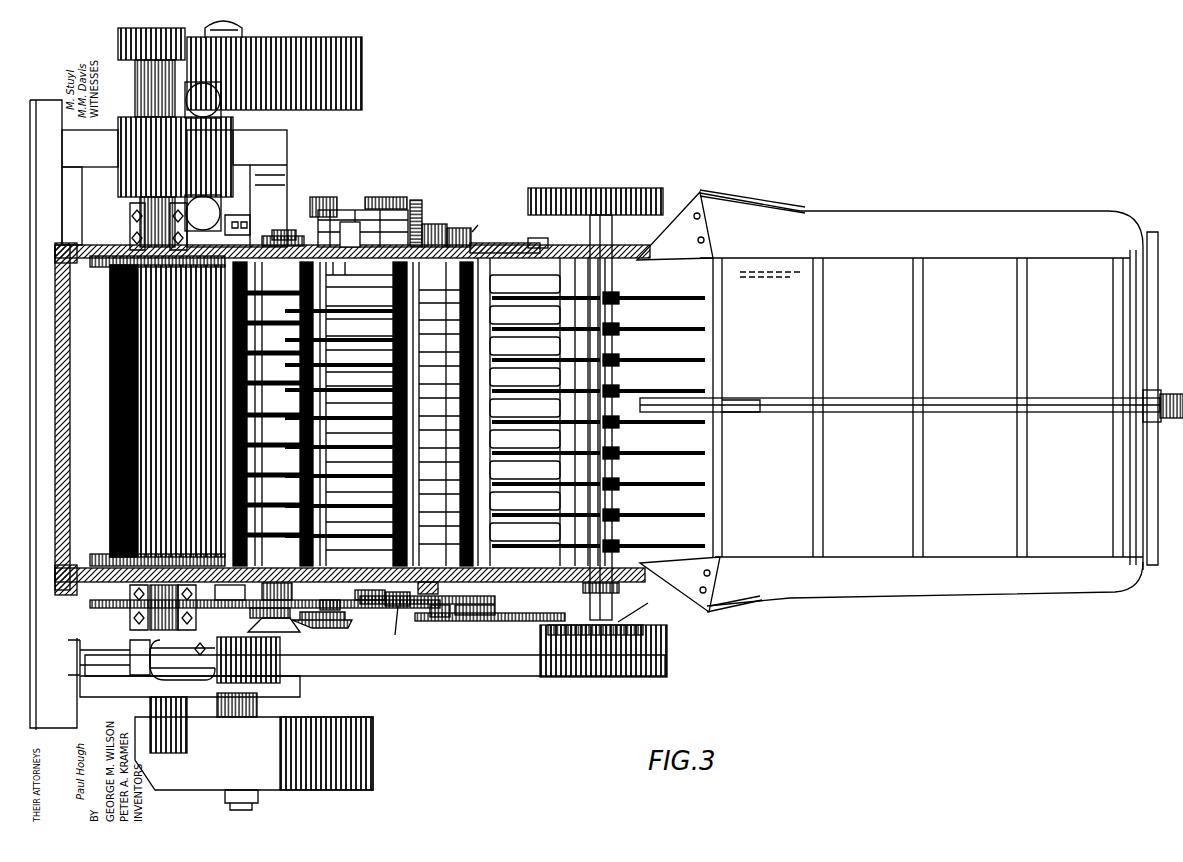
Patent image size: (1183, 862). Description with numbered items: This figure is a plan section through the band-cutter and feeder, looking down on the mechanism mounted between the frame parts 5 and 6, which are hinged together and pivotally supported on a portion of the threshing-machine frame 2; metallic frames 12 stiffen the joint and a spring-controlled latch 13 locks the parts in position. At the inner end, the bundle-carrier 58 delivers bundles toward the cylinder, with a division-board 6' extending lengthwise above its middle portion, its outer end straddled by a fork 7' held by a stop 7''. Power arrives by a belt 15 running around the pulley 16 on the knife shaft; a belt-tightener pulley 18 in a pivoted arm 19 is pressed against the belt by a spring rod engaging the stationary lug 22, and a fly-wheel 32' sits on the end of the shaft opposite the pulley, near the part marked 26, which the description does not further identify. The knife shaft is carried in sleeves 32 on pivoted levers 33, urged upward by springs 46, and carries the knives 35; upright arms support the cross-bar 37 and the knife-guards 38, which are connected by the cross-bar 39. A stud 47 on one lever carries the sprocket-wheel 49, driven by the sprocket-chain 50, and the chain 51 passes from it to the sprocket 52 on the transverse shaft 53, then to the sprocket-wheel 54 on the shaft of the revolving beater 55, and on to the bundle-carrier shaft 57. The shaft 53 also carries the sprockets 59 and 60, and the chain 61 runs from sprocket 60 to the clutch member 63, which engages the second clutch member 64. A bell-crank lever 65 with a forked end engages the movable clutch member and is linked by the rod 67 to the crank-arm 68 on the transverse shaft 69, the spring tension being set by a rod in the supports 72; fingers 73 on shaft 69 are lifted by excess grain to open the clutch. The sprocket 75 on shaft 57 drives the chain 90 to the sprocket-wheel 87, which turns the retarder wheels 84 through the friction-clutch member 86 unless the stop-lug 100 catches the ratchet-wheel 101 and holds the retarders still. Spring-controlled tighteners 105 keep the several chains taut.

The frame of threshing-machine 2 is at (62, 185).
The inner frame part 5 is at (445, 552).
The outer frame part 6 is at (929, 399).
The division-board 6' is at (748, 420).
The fork 7' is at (900, 418).
The stop 7'' is at (1163, 416).
The metallic frame 12 is at (688, 622).
The spring-controlled latch 13 is at (738, 620).
The belt 15 is at (352, 676).
The pulley 16 is at (628, 677).
The belt-tightener pulley 18 is at (282, 658).
The pivoted arm 19 is at (230, 717).
The stationary lug or arm 22 is at (180, 753).
The bracket 26 is at (642, 607).
The sleeve 32 is at (615, 417).
The fly-wheel 32' is at (595, 189).
The pivoted lever 33 is at (520, 620).
The knives 35 is at (662, 514).
The cross-bar 37 is at (602, 330).
The knife-guards 38 is at (533, 412).
The cross-bar 39 is at (540, 422).
The springs 46 is at (440, 617).
The stud 47 is at (470, 615).
The sprocket-wheel 49 is at (480, 600).
The sprocket-chain 50 is at (515, 621).
The chain 51 is at (230, 592).
The sprocket 52 is at (402, 622).
The transverse shaft 53 is at (398, 350).
The sprocket-wheel 54 is at (115, 608).
The revolving beater 55 is at (157, 411).
The bundle-carrier shaft 57 is at (370, 600).
The bundle-carrier 58 is at (770, 288).
The sprocket 59 is at (446, 236).
The sprocket 60 is at (412, 220).
The chain 61 is at (382, 208).
The clutch member 63 is at (340, 215).
The clutch member 64 is at (345, 269).
The bell-crank lever 65 is at (437, 233).
The rod 67 is at (450, 414).
The crank-arm 68 is at (478, 225).
The transverse shaft 69 is at (455, 298).
The supports 72 is at (266, 414).
The rods or fingers 73 is at (393, 414).
The sprocket 75 is at (350, 630).
The retarder wheels 84 is at (335, 530).
The friction-clutch member 86 is at (277, 591).
The sprocket-wheel 87 is at (270, 617).
The chain 90 is at (335, 615).
The stop-lug 100 is at (266, 235).
The ratchet-wheel 101 is at (284, 230).
The spring-controlled tighteners 105 is at (325, 197).